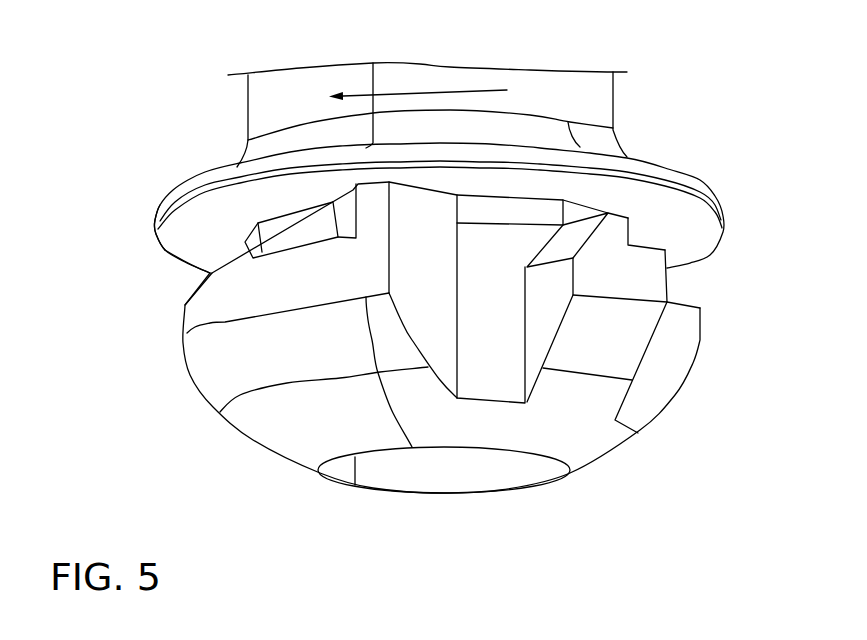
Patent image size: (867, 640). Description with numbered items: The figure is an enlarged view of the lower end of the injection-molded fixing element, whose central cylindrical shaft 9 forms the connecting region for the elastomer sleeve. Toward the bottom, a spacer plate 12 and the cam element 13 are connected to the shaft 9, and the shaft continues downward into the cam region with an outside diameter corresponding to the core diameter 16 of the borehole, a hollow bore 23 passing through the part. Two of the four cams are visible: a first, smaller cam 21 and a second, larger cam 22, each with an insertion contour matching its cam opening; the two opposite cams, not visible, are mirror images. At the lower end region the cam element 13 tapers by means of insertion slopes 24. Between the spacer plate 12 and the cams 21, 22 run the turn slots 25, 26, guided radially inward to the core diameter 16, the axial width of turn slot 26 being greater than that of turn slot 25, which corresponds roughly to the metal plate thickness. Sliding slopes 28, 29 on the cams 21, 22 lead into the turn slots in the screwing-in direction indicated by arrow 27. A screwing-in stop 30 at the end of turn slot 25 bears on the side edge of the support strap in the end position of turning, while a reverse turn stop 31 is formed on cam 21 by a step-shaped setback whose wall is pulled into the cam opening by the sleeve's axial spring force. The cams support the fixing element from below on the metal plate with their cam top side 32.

The shaft 9 is at (285, 103).
The spacer plate 12 is at (672, 175).
The cam element 13 is at (168, 131).
The core diameter 16 is at (500, 383).
The cam 21 is at (677, 287).
The cam 22 is at (170, 353).
The hollow bore 23 is at (452, 463).
The insertion slopes 24 is at (587, 395).
The turn slot 25 is at (598, 197).
The turn slot 26 is at (222, 258).
The screwing-in direction 27 is at (453, 88).
The sliding slope 28 is at (585, 228).
The sliding slope 29 is at (187, 298).
The screwing-in stop 30 is at (340, 222).
The reverse turn stop 31 is at (640, 233).
The cam top side 32 is at (212, 268).